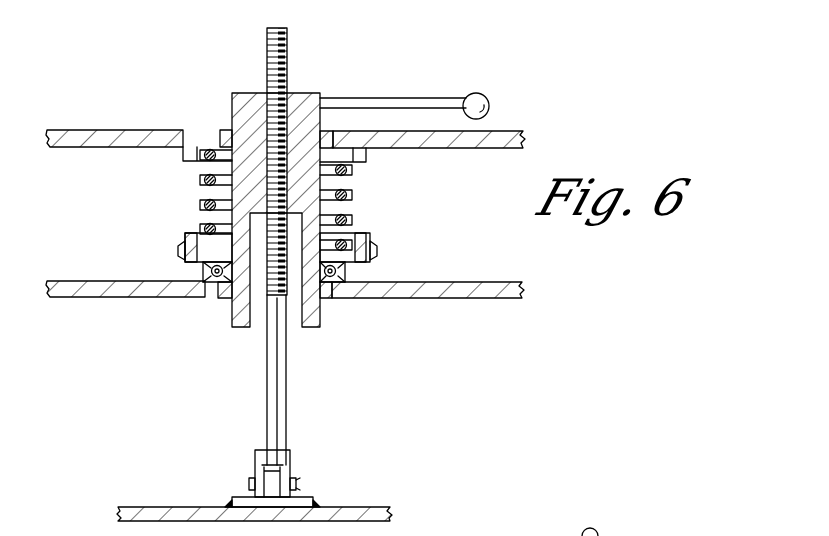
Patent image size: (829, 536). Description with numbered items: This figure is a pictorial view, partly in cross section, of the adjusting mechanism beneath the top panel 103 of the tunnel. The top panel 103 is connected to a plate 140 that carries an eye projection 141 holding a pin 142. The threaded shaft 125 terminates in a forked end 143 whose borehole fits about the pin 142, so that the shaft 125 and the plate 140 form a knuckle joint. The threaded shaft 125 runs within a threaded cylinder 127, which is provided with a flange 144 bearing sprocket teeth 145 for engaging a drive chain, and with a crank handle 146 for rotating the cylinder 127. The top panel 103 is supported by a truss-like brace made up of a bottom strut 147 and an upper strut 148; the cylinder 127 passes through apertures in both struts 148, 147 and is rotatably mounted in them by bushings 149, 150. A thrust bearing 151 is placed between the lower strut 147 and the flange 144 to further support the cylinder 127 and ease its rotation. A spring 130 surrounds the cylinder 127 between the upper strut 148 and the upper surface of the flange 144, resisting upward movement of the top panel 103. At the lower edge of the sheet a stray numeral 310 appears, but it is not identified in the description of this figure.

The top panel 103 is at (140, 507).
The threaded shaft 125 is at (265, 412).
The threaded cylinder 127 is at (237, 330).
The spring 130 is at (200, 178).
The plate 140 is at (300, 498).
The eye projection 141 is at (270, 476).
The pin 142 is at (250, 484).
The forked end 143 is at (255, 453).
The flange 144 is at (360, 236).
The sprocket teeth 145 is at (182, 242).
The crank handle 146 is at (400, 97).
The bottom strut 147 is at (478, 282).
The upper strut 148 is at (432, 148).
The bushing 149 is at (221, 128).
The bushing 150 is at (218, 298).
The thrust bearing 151 is at (345, 272).
The element of adjacent figure 310 is at (548, 535).